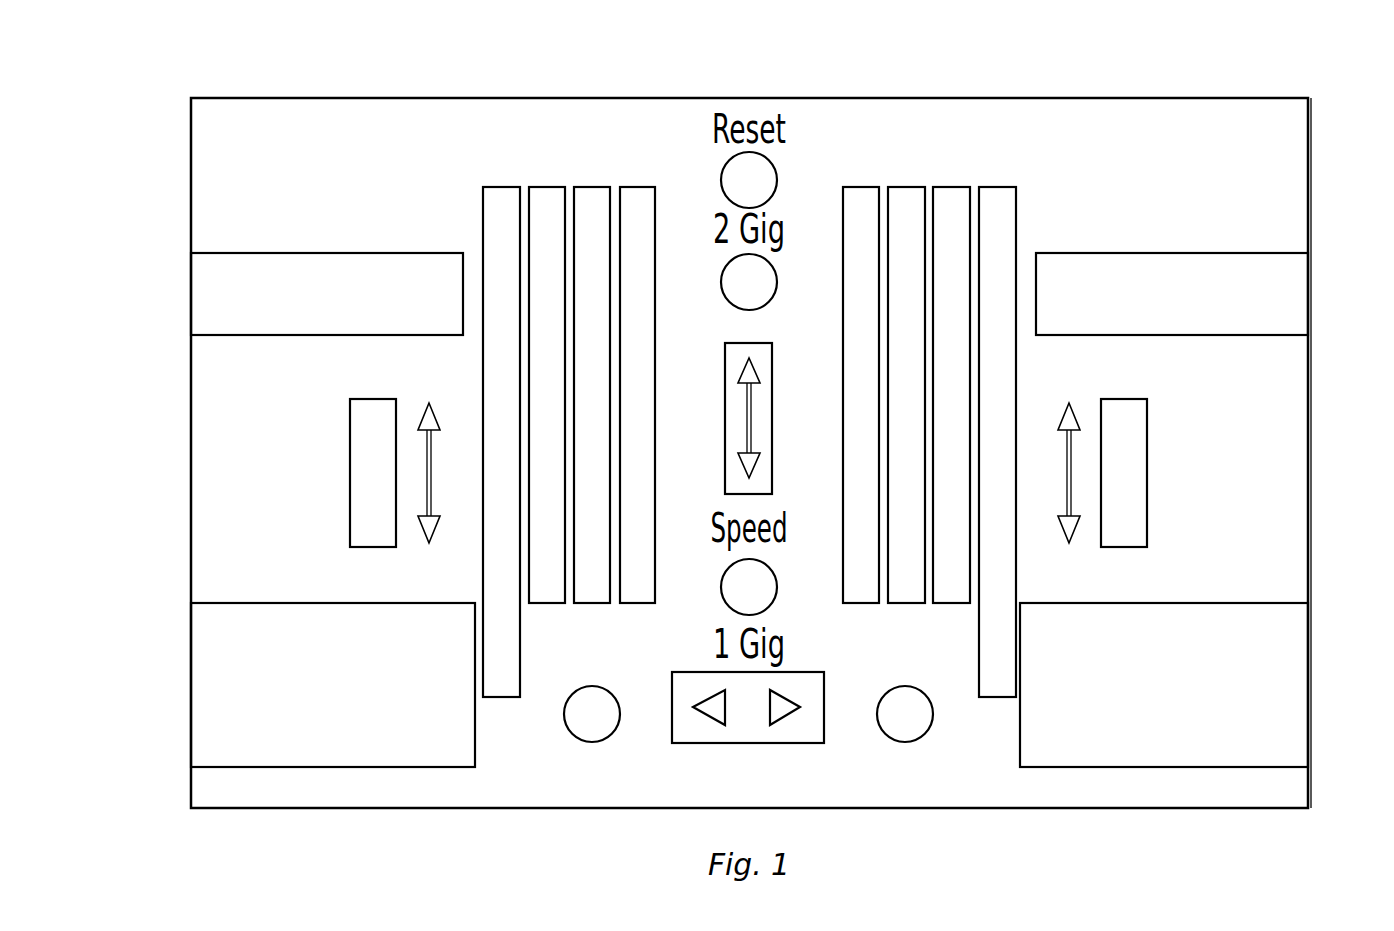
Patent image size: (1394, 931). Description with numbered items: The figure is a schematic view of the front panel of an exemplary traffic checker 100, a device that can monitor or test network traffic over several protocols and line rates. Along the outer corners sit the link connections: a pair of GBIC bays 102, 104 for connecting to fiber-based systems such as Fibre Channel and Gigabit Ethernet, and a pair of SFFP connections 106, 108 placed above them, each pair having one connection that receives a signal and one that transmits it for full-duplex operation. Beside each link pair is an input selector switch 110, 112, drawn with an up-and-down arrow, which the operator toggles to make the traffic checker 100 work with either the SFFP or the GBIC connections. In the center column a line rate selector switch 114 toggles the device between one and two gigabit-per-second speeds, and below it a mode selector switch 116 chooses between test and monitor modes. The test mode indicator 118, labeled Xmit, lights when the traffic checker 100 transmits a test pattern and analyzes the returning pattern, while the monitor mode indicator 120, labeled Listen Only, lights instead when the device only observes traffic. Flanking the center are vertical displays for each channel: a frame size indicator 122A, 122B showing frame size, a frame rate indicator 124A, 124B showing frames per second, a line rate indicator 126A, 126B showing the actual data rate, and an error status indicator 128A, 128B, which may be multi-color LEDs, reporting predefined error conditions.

The traffic checker 100 is at (1311, 96).
The GBIC bay 102 is at (191, 686).
The GBIC bay 104 is at (1308, 686).
The SFFP connection 106 is at (191, 297).
The SFFP connection 108 is at (1308, 297).
The input selector switch 110 is at (373, 399).
The input selector switch 112 is at (1125, 399).
The line rate selector switch 114 is at (772, 411).
The mode selector switch 116 is at (745, 743).
The test mode indicator 118 is at (592, 686).
The monitor mode indicator 120 is at (933, 716).
The frame size indicator 122A is at (637, 187).
The frame size indicator 122B is at (862, 187).
The frame rate indicator 124A is at (592, 604).
The frame rate indicator 124B is at (906, 604).
The line rate indicator 126A is at (548, 187).
The line rate indicator 126B is at (952, 187).
The error status indicator 128A is at (483, 211).
The error status indicator 128B is at (1016, 211).